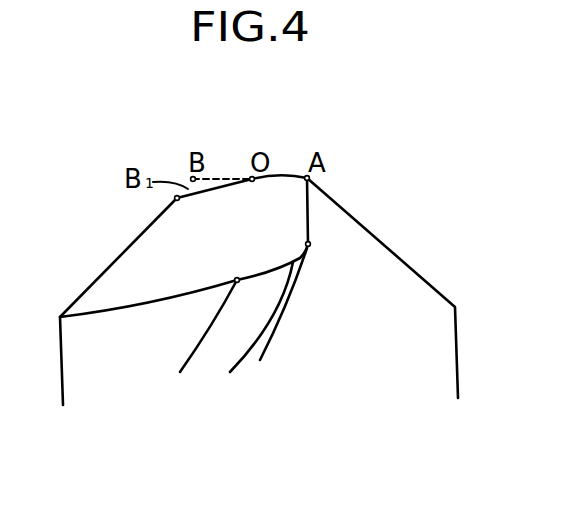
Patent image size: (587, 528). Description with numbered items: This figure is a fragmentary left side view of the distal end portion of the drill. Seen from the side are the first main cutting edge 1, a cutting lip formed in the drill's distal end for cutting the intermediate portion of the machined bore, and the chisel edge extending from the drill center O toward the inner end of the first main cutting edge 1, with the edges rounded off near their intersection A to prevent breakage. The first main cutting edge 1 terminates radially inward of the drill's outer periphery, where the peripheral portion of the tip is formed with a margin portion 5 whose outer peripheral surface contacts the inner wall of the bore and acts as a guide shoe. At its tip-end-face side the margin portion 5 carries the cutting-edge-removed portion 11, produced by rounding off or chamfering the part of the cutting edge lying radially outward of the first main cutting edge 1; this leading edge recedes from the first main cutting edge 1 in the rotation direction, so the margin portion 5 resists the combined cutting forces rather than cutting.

The first main cutting edge 1 is at (310, 213).
The margin portion 5 is at (260, 282).
The cutting-edge-removed portion 11 is at (297, 275).